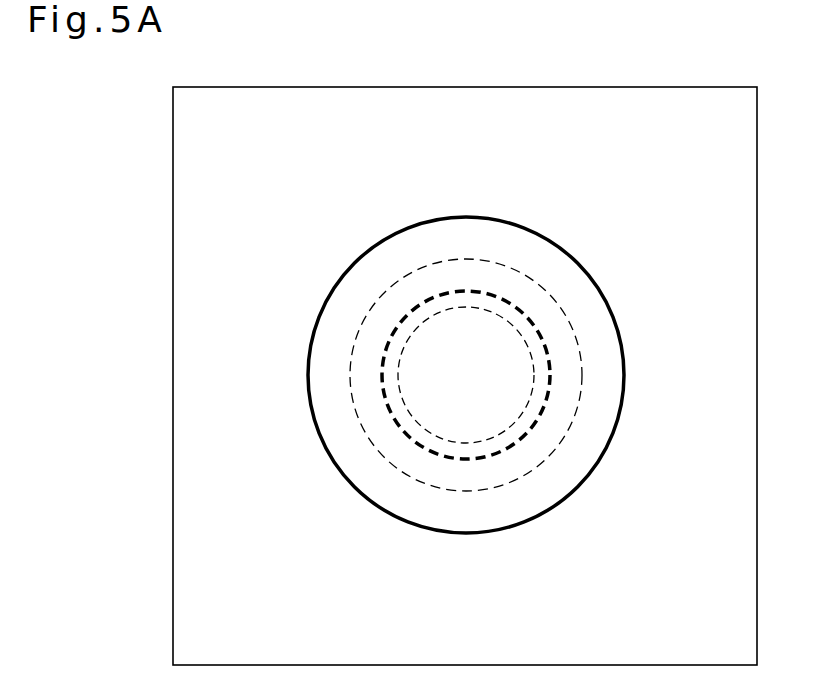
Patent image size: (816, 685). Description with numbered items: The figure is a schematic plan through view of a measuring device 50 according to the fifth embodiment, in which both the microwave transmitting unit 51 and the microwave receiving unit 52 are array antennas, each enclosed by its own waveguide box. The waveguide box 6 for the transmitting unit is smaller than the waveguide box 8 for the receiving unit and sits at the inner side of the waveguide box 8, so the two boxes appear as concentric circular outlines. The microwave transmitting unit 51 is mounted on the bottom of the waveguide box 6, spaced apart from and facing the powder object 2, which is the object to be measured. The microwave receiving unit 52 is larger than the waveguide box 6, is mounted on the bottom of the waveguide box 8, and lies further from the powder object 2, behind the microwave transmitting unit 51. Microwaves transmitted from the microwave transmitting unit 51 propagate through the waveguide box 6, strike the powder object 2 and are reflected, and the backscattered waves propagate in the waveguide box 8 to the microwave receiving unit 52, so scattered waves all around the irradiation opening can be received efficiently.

The powder object 2 is at (701, 87).
The measuring device 50 is at (360, 228).
The waveguide box for the receiving unit 8 is at (625, 355).
The microwave receiving unit 52 is at (507, 262).
The waveguide box for the transmitting unit 6 is at (382, 371).
The microwave transmitting unit 51 is at (474, 444).